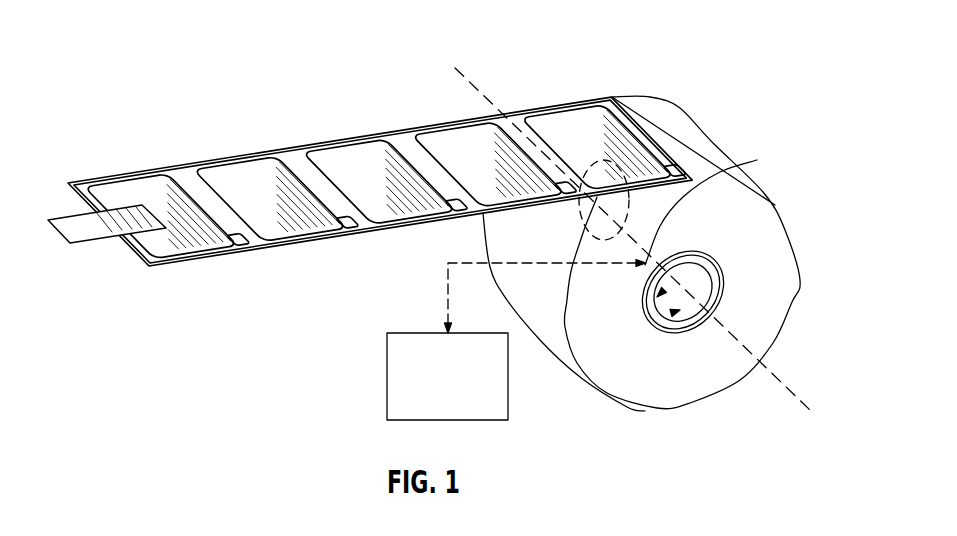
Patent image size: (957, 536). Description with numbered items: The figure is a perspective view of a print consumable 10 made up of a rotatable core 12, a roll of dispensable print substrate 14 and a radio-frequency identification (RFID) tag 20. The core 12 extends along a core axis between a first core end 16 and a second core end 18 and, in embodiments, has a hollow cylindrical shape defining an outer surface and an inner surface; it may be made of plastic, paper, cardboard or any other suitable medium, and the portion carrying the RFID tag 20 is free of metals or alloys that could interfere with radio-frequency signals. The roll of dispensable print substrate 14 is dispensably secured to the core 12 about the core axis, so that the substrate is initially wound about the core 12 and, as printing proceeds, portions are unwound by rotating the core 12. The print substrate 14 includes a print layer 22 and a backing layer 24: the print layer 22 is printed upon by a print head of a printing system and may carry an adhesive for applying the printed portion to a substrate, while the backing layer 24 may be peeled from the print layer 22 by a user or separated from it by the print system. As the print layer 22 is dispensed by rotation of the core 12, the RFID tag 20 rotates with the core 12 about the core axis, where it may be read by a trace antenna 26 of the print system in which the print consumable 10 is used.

The print consumable 10 is at (108, 56).
The rotatable core 12 is at (748, 156).
The roll of dispensable print substrate 14 is at (815, 244).
The first core end 16 is at (582, 166).
The second core end 18 is at (687, 328).
The radio-frequency identification (RFID) tag 20 is at (765, 192).
The print layer 22 is at (356, 153).
The backing layer 24 is at (647, 113).
The trace antenna 26 is at (441, 333).